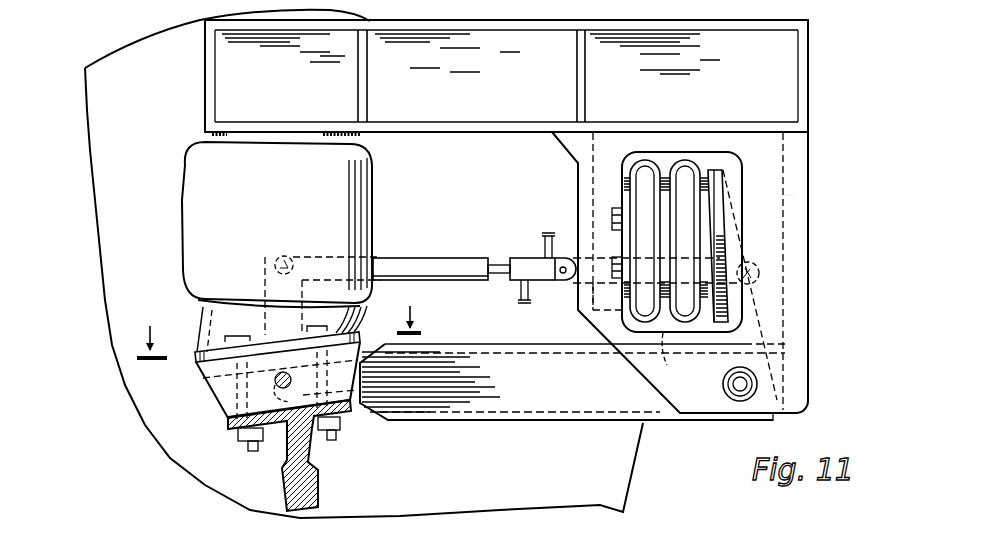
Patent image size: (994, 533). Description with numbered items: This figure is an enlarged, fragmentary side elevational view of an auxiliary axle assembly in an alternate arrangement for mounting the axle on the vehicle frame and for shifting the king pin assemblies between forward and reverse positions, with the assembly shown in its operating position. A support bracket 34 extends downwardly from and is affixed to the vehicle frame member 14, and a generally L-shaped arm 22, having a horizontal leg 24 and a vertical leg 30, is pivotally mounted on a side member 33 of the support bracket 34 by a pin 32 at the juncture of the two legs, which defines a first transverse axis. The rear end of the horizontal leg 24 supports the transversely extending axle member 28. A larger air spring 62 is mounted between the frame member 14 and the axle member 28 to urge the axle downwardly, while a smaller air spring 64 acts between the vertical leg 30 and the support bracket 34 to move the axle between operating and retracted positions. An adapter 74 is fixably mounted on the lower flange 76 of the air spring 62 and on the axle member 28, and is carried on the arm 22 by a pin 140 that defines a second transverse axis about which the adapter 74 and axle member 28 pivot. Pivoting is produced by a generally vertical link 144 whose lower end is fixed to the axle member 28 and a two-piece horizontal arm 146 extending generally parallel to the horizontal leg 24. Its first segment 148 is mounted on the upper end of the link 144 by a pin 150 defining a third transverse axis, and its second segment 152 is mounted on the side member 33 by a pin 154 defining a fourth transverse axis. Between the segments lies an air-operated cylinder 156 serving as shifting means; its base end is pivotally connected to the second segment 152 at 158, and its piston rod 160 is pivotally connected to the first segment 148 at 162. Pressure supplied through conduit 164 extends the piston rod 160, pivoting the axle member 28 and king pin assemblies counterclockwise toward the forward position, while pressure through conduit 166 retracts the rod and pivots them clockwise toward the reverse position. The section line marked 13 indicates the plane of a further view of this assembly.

The frame member 14 is at (792, 18).
The air spring 62 is at (193, 172).
The pin 150 is at (285, 255).
The first segment 148 is at (388, 260).
The horizontal arm 146 is at (514, 226).
The pivotal connection 162 is at (478, 262).
The conduit 164 is at (547, 252).
The piston rod 160 is at (497, 276).
The conduit 166 is at (520, 293).
The air-operated cylinder 156 is at (547, 281).
The pivotal connection 158 is at (561, 283).
The air spring 64 is at (689, 166).
The vertical leg 30 is at (724, 197).
The support bracket 34 is at (796, 196).
The pin 154 is at (760, 259).
The side member 33 is at (770, 295).
The second segment 152 is at (674, 359).
The pin 32 is at (740, 401).
The arm 22 is at (553, 428).
The horizontal leg 24 is at (490, 397).
The axle member 28 is at (287, 480).
The pin 140 is at (275, 388).
The adapter 74 is at (227, 397).
The link 144 is at (213, 377).
The lower flange 76 is at (197, 353).
The section line 13- 13 is at (272, 322).